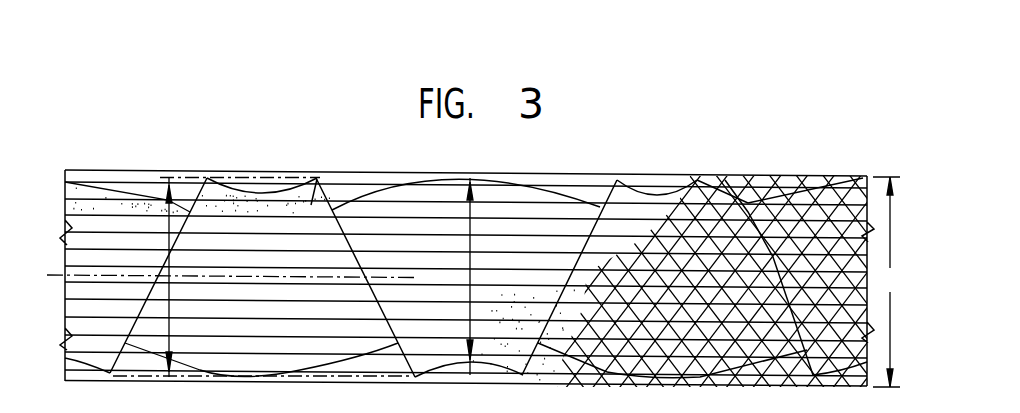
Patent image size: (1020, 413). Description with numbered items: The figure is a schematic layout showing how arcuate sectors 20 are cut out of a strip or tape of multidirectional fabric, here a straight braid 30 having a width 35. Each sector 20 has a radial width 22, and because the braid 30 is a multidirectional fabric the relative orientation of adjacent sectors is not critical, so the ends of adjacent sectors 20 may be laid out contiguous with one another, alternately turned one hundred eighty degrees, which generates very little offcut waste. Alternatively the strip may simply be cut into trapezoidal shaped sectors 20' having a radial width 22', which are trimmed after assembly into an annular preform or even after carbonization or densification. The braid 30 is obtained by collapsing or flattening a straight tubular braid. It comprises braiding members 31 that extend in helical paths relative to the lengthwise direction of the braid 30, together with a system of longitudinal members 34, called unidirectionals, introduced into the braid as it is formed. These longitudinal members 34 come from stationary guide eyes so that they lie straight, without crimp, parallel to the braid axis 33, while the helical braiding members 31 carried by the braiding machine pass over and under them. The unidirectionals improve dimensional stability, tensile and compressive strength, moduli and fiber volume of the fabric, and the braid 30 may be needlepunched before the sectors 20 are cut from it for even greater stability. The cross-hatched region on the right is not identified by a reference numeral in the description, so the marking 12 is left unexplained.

The tubular body 12 is at (782, 192).
The sectors 20 is at (355, 243).
The trapezoidal shaped sectors 20' is at (240, 141).
The radial width 22 is at (507, 253).
The radial width 22' is at (132, 242).
The straight braid 30 is at (588, 173).
The braiding members 31 is at (683, 200).
The braid axis 33 is at (53, 275).
The longitudinal members 34 is at (64, 198).
The width 35 is at (889, 282).